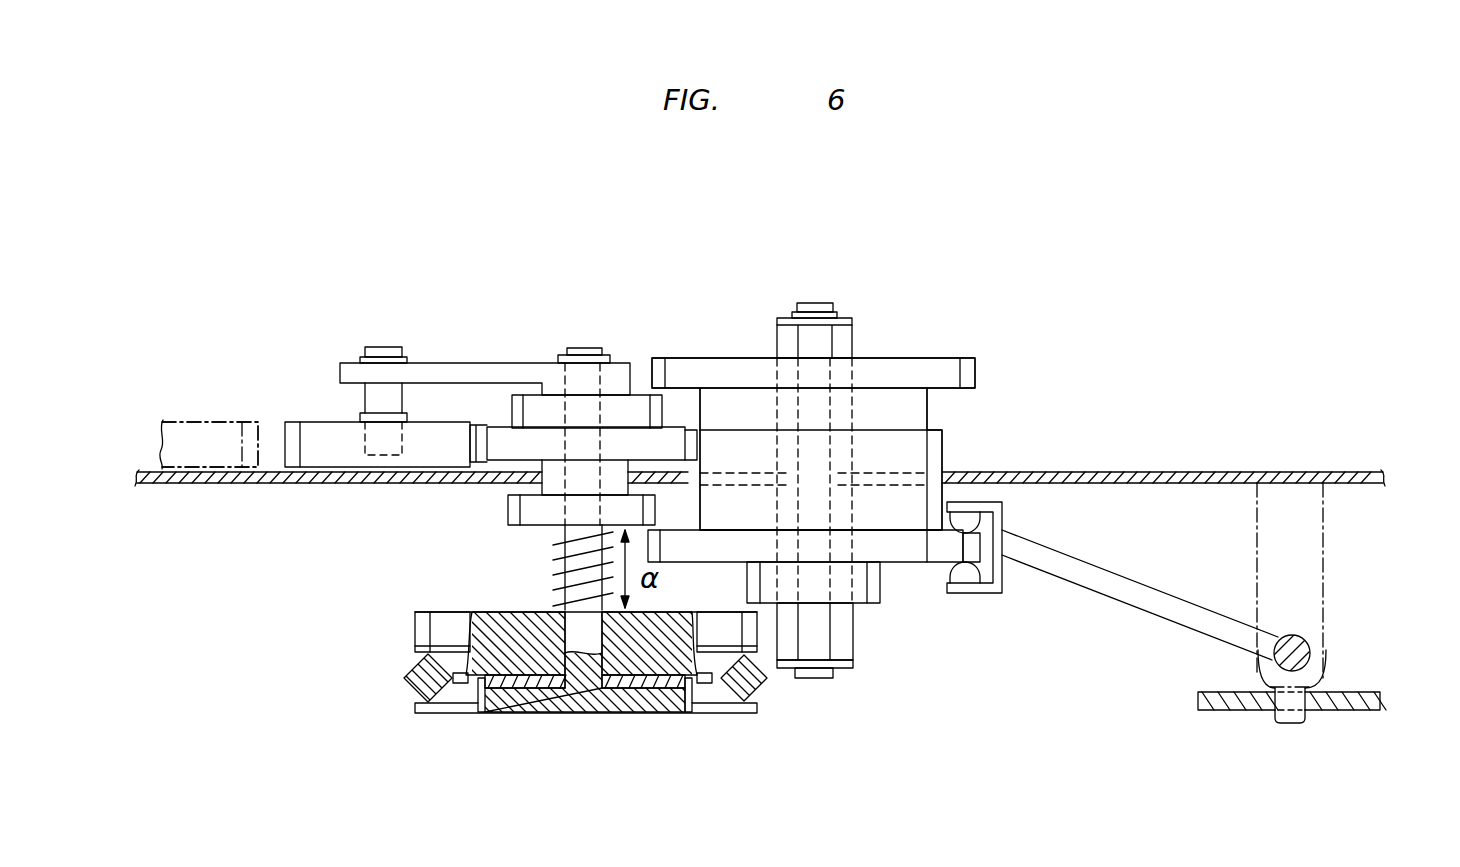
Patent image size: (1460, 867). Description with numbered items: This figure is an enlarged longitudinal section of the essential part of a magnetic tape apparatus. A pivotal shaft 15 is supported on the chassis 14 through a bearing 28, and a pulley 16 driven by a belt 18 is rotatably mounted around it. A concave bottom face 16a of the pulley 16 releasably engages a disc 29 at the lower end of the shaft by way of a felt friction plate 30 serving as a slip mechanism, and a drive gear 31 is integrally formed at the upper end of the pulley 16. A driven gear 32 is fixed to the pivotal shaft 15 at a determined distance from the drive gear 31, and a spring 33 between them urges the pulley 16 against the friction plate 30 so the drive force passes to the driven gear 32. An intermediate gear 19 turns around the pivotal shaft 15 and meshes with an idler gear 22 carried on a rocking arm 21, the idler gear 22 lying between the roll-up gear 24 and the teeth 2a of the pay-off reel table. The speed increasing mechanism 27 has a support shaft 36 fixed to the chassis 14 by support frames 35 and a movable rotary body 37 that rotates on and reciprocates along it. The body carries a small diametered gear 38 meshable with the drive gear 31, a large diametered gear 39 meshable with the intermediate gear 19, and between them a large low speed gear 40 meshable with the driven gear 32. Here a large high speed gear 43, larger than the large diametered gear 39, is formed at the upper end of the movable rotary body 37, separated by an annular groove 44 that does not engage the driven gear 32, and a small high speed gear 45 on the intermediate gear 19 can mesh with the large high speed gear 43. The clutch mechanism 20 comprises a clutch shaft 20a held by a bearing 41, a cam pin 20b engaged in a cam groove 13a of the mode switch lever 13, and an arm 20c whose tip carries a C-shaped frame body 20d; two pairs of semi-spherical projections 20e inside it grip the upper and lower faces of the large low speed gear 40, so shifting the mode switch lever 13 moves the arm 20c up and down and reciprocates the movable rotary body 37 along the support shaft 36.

The teeth 2a is at (252, 421).
The roll-up gear 24 is at (210, 444).
The idler gear 22 is at (317, 422).
The rocking arm 21 is at (432, 363).
The pivotal shaft 15 is at (580, 347).
The small high speed gear 45 is at (640, 395).
The intermediate gear 19 is at (680, 427).
The bearing 28 is at (520, 470).
The driven gear 32 is at (505, 515).
The spring 33 is at (557, 567).
The chassis 14 is at (1212, 470).
The large high speed gear 43 is at (748, 365).
The annular groove 44 is at (722, 395).
The support shaft 36 is at (823, 345).
The large diametered gear 39 is at (947, 442).
The speed increasing mechanism 27 is at (928, 322).
The movable rotary body 37 is at (953, 350).
The support frames 35 is at (777, 323).
The large low speed gear 40 is at (917, 562).
The small diametered gear 38 is at (877, 603).
The frame body 20d is at (1002, 517).
The semi-spherical projections 20e is at (963, 515).
The arm 20c is at (1170, 600).
The clutch shaft 20a is at (1300, 638).
The clutch mechanism 20 is at (1331, 650).
The cam pin 20b is at (1293, 725).
The mode switch lever 13 is at (1198, 700).
The cam groove 13a is at (1273, 710).
The bearing 41 is at (1320, 532).
The drive gear 31 is at (758, 697).
The belt 18 is at (410, 687).
The pulley 16 is at (440, 713).
The concave bottom face 16a is at (515, 692).
The disc 29 is at (630, 713).
The friction plate 30 is at (667, 713).